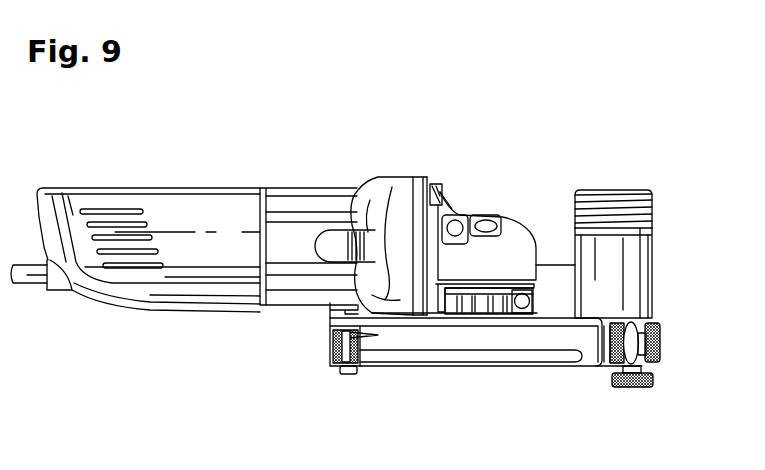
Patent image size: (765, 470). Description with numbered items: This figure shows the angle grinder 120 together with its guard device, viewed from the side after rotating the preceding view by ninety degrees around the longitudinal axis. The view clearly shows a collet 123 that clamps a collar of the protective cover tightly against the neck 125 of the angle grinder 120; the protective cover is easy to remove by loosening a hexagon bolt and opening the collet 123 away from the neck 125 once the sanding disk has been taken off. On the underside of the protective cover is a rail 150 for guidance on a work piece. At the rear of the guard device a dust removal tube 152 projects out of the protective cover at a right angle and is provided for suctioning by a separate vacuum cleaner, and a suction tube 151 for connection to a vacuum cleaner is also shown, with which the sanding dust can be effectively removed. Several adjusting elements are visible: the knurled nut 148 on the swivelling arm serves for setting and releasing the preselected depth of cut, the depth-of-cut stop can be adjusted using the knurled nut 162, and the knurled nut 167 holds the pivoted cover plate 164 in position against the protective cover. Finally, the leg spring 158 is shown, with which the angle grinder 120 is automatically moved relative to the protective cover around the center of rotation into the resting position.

The angle grinder 120 is at (308, 152).
The collet 123 is at (546, 286).
The neck 125 is at (472, 300).
The knurled nut 148 is at (632, 334).
The rail 150 is at (405, 368).
The suction tube 151 is at (637, 218).
The dust removal tube 152 is at (632, 262).
The leg spring 158 is at (333, 350).
The knurled nut 162 is at (661, 345).
The pivoted cover plate 164 is at (608, 372).
The knurled nut 167 is at (638, 383).